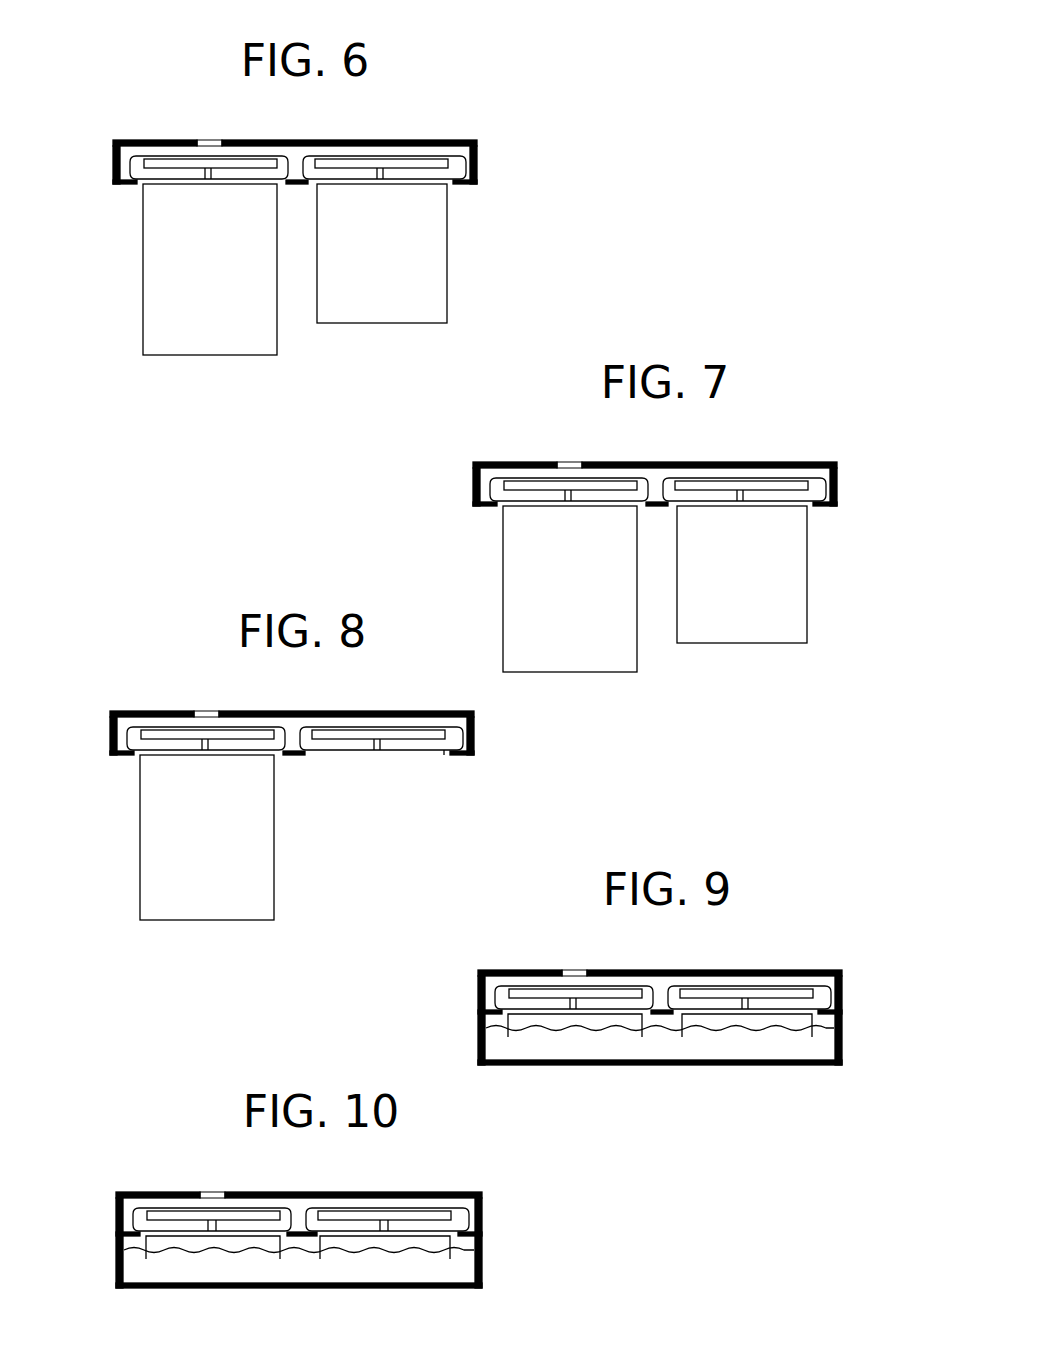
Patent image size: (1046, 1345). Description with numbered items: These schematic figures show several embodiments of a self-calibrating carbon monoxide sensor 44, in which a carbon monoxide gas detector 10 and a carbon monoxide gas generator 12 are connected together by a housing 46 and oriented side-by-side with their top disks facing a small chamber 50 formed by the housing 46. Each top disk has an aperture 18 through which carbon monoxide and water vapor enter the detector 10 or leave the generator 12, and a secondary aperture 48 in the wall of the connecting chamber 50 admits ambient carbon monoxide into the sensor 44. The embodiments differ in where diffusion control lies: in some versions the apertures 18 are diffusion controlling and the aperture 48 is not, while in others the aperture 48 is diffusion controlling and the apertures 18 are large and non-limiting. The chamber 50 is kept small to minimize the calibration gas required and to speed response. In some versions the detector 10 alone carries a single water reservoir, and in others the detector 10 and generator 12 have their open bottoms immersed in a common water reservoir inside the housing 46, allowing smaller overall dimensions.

In FIG. 6, the carbon monoxide gas detector 10 is at (155, 281).
In FIG. 7, the carbon monoxide gas detector 10 is at (543, 589).
In FIG. 8, the carbon monoxide gas detector 10 is at (179, 837).
In FIG. 9, the carbon monoxide gas detector 10 is at (537, 1028).
In FIG. 10, the carbon monoxide gas detector 10 is at (175, 1252).
In FIG. 6, the carbon monoxide gas generator 12 is at (444, 247).
In FIG. 7, the carbon monoxide gas generator 12 is at (770, 574).
In FIG. 8, the carbon monoxide gas generator 12 is at (468, 769).
In FIG. 9, the carbon monoxide gas generator 12 is at (783, 1029).
In FIG. 10, the carbon monoxide gas generator 12 is at (421, 1252).
In FIG. 6, the aperture 18 is at (210, 158).
In FIG. 7, the aperture 18 is at (682, 454).
In FIG. 8, the aperture 18 is at (319, 703).
In FIG. 9, the aperture 18 is at (686, 962).
In FIG. 10, the aperture 18 is at (324, 1183).
In FIG. 6, the self-calibrating carbon monoxide sensor 44 is at (298, 105).
In FIG. 7, the self-calibrating carbon monoxide sensor 44 is at (657, 427).
In FIG. 8, the self-calibrating carbon monoxide sensor 44 is at (295, 676).
In FIG. 9, the self-calibrating carbon monoxide sensor 44 is at (658, 965).
In FIG. 10, the self-calibrating carbon monoxide sensor 44 is at (298, 1184).
In FIG. 6, the housing 46 is at (479, 165).
In FIG. 7, the housing 46 is at (688, 487).
In FIG. 8, the housing 46 is at (326, 736).
In FIG. 9, the housing 46 is at (691, 1020).
In FIG. 10, the housing 46 is at (331, 1243).
In FIG. 6, the secondary aperture 48 is at (203, 124).
In FIG. 7, the secondary aperture 48 is at (543, 408).
In FIG. 8, the secondary aperture 48 is at (180, 657).
In FIG. 9, the secondary aperture 48 is at (547, 921).
In FIG. 10, the secondary aperture 48 is at (185, 1139).
In FIG. 6, the chamber 50 is at (466, 137).
In FIG. 7, the chamber 50 is at (678, 426).
In FIG. 8, the chamber 50 is at (305, 674).
In FIG. 9, the chamber 50 is at (671, 933).
In FIG. 10, the chamber 50 is at (310, 1155).